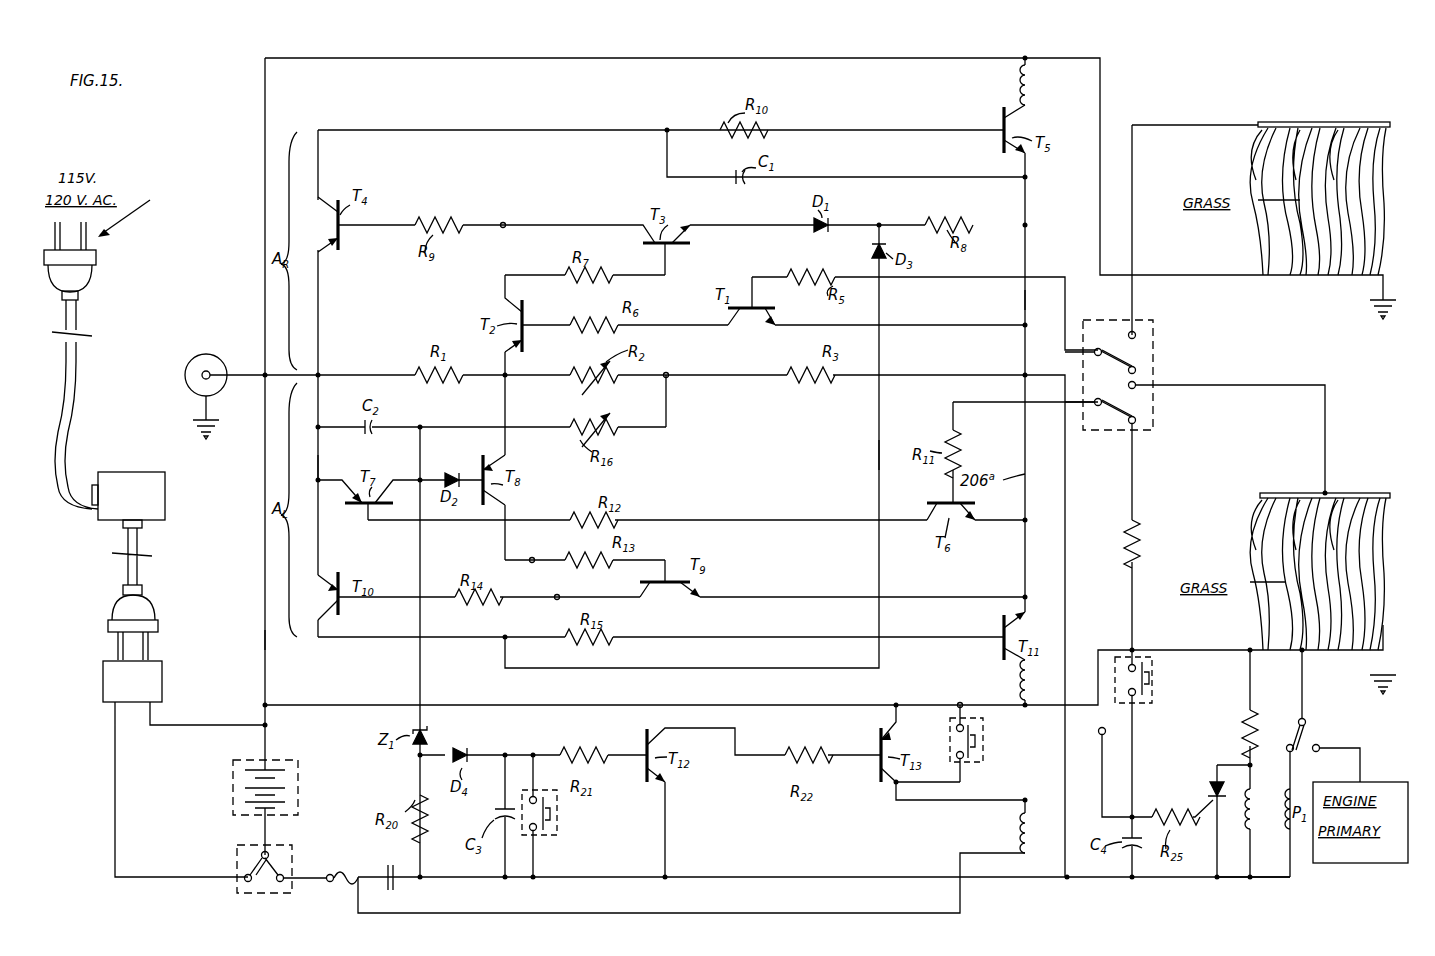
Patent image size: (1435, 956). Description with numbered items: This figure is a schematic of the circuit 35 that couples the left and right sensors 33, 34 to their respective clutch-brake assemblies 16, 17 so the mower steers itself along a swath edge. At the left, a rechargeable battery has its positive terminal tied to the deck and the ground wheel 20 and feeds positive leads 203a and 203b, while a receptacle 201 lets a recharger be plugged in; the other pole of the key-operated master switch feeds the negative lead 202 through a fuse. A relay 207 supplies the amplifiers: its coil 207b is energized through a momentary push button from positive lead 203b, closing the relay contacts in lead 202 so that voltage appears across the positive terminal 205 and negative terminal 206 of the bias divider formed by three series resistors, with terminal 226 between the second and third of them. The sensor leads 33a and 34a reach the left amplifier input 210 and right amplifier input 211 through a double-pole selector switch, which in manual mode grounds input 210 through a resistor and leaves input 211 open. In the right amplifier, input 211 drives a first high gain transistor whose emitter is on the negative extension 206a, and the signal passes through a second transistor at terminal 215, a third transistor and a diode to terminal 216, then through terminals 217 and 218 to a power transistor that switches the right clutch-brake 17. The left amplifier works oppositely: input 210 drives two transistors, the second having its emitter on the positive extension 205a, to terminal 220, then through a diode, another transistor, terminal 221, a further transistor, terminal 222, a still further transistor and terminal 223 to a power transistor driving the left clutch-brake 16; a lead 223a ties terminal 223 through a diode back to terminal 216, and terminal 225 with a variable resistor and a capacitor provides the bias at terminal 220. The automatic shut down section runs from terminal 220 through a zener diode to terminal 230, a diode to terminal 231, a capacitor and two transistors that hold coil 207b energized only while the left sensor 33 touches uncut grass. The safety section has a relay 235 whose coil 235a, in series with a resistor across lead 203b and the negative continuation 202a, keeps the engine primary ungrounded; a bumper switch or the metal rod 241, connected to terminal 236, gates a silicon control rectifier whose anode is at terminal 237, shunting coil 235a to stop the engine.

The left clutch-brake assembly 16 is at (1018, 690).
The right clutch-brake assembly 17 is at (1034, 84).
The ground wheel 20 is at (206, 360).
The left sensor 33 is at (1268, 493).
The left sensor lead 33a is at (1218, 386).
The right sensor 34 is at (1270, 125).
The right sensor lead 34a is at (1215, 128).
The circuit 35 is at (432, 57).
The receptacle 201 is at (162, 683).
The negative lead 202 is at (732, 877).
The rightward continuation of the negative lead 202a is at (1250, 878).
The positive lead 203a is at (264, 643).
The positive lead 203b is at (295, 705).
The positive terminal 205 is at (318, 375).
The positive terminal extension 205a is at (318, 465).
The negative terminal 206 is at (1025, 375).
The negative extension lead 206a is at (1025, 298).
The relay 207 is at (398, 890).
The relay coil 207b is at (1018, 831).
The left amplifier input 210 is at (993, 406).
The right amplifier input 211 is at (1043, 277).
The terminal 215 is at (505, 378).
The terminal 216 is at (880, 225).
The terminal 217 is at (503, 225).
The terminal 218 is at (680, 121).
The terminal 220 is at (420, 480).
The terminal 221 is at (532, 560).
The terminal 222 is at (555, 597).
The terminal 223 is at (507, 637).
The lead 223a is at (879, 456).
The terminal 225 is at (420, 427).
The terminal 226 is at (667, 375).
The terminal 230 is at (418, 757).
The terminal 231 is at (504, 755).
The relay 235 is at (1316, 732).
The relay coil 235a is at (1253, 838).
The terminal 236 is at (1165, 802).
The terminal 237 is at (1250, 763).
The metal rod 241 is at (1098, 734).